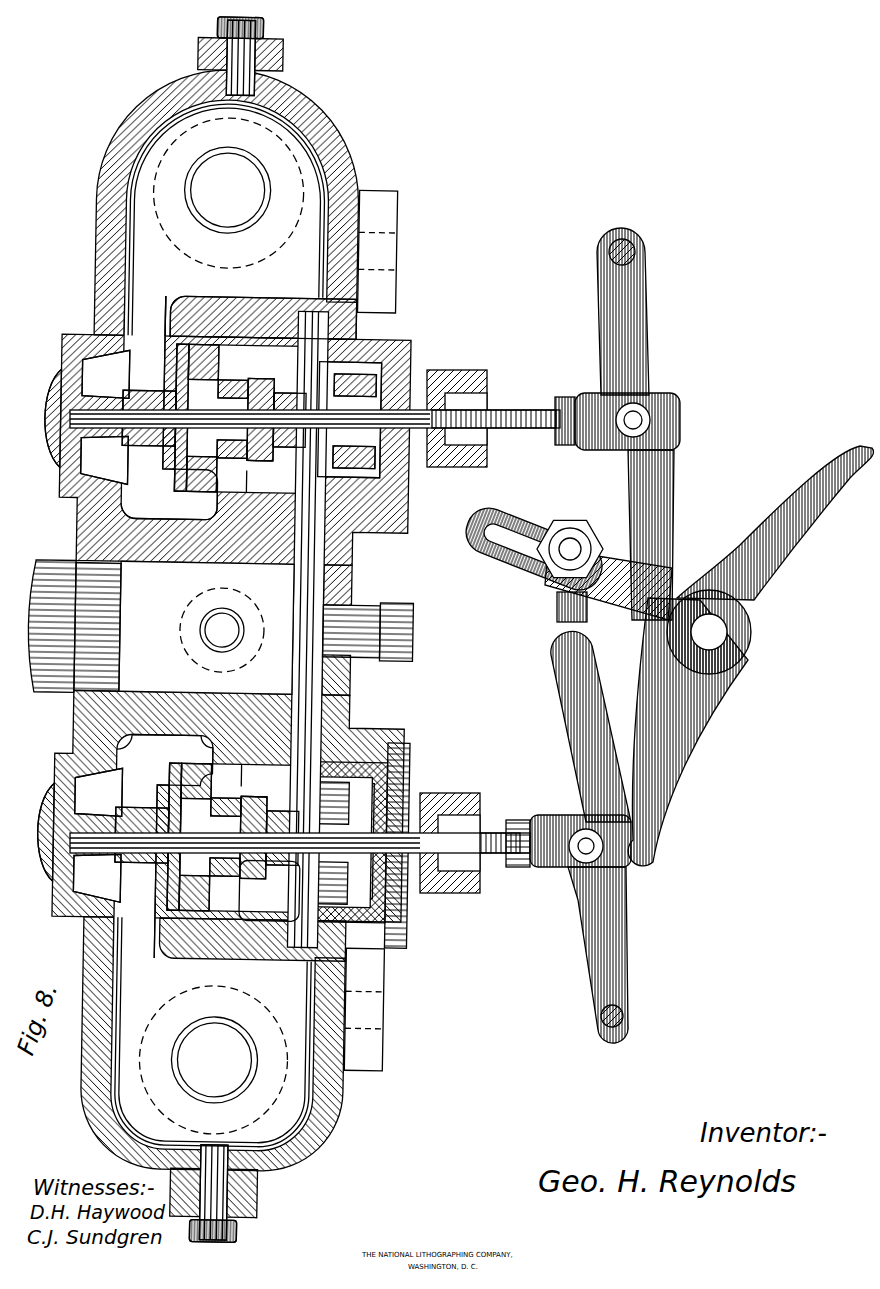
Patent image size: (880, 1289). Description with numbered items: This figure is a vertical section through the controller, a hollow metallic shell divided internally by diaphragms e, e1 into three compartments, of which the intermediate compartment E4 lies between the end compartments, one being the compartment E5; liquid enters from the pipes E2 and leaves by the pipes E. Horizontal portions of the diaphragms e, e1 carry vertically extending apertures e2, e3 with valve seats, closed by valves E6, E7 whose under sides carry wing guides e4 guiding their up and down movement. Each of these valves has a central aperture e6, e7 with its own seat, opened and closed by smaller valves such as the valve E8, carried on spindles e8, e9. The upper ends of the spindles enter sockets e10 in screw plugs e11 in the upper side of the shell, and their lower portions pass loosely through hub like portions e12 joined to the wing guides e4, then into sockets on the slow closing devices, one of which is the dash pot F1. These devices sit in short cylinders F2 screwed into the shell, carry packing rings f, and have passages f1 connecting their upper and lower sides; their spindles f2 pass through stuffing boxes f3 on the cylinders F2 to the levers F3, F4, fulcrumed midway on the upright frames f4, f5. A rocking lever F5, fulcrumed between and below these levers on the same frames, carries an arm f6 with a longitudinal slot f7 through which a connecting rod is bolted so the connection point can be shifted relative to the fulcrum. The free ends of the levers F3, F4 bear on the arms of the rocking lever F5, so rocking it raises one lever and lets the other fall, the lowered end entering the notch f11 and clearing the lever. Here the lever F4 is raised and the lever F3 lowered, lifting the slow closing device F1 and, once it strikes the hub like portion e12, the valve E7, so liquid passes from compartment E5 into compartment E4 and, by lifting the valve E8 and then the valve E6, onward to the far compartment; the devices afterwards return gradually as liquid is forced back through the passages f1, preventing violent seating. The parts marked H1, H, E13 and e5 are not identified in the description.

The inlet pipe connection H1 is at (254, 26).
The outlet pipe connection H is at (240, 1232).
The pipes E is at (227, 189).
The pipes E2 is at (208, 1060).
The intermediate compartment E4 is at (206, 627).
The end compartment E5 is at (297, 222).
The valve E6 is at (256, 319).
The central aperture of valve e6 is at (159, 315).
The valve E7 is at (168, 825).
The valve E8 is at (190, 362).
The sleeve flange E13 is at (142, 821).
The diaphragm e is at (186, 330).
The diaphragm e1 is at (232, 720).
The aperture e2 is at (263, 796).
The aperture e3 is at (246, 472).
The wing guides e4 is at (222, 629).
The collar e5 is at (234, 666).
The central aperture of valve e7 is at (188, 836).
The spindle e8 is at (149, 414).
The spindle e9 is at (251, 628).
The sockets e10 is at (70, 380).
The screw plugs e11 is at (62, 440).
The hub like portions e12 is at (296, 398).
The packing rings f is at (293, 768).
The slow closing device F1 is at (338, 830).
The short cylinders F2 is at (308, 356).
The passages f1 is at (342, 394).
The spindles f2 is at (516, 408).
The stuffing boxes f3 is at (470, 372).
The lever F3 is at (622, 424).
The lever F4 is at (580, 837).
The rocking lever F5 is at (748, 508).
The upright frame f4 is at (570, 548).
The upright frame f5 is at (557, 596).
The arm f6 is at (608, 584).
The longitudinally extending slot f7 is at (534, 549).
The notch or indentation f11 is at (664, 632).